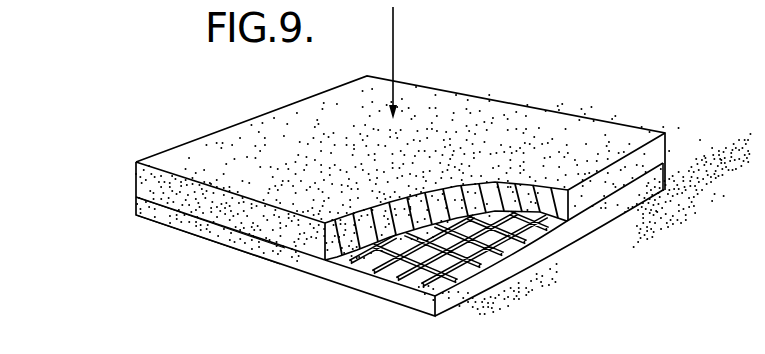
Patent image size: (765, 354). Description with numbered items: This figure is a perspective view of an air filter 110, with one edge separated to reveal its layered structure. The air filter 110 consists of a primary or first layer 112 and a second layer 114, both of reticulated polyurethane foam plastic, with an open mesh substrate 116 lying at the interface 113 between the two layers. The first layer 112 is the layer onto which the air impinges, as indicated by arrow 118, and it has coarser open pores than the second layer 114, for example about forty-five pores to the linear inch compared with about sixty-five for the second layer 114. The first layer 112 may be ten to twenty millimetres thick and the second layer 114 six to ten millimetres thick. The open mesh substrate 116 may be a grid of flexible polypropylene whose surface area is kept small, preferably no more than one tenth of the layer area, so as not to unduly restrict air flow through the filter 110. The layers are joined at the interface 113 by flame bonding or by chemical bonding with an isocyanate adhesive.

The air filter 110 is at (516, 104).
The first layer 112 is at (149, 182).
The interface 113 is at (288, 250).
The second layer 114 is at (207, 226).
The open mesh substrate 116 is at (496, 257).
The arrow 118 is at (395, 48).